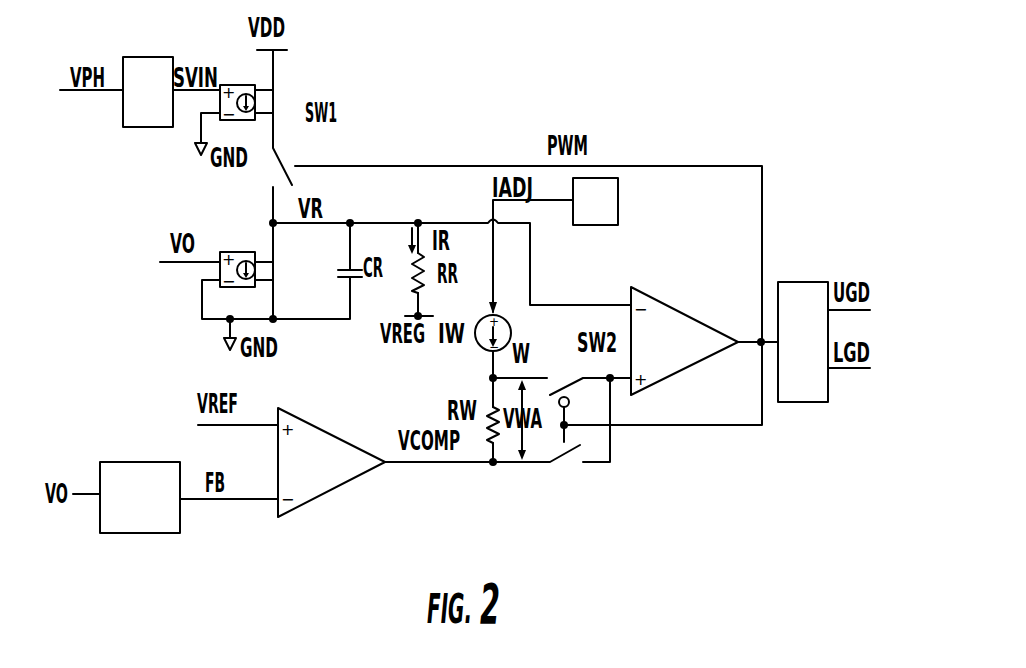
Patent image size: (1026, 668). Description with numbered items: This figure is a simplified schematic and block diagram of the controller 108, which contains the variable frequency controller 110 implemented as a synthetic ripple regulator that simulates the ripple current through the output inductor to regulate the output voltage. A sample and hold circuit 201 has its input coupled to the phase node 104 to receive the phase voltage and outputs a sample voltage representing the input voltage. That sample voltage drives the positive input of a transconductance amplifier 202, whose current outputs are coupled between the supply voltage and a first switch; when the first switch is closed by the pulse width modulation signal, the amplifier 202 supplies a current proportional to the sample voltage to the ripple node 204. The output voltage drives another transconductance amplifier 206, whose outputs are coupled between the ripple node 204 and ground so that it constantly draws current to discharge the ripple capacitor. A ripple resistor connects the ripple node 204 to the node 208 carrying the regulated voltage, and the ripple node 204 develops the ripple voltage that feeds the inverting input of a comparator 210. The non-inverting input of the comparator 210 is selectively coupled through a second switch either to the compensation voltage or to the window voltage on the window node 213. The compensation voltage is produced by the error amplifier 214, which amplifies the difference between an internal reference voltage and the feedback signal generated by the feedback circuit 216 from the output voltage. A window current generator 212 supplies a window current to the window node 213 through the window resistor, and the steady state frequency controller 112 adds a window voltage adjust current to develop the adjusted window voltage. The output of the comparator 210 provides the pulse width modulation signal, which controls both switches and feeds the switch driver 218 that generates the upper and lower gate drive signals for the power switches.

The phase node 104 is at (105, 92).
The sample and hold circuit 201 is at (166, 112).
The transconductance amplifier 202 is at (241, 85).
The transconductance amplifier 206 is at (240, 252).
The ripple node 204 is at (418, 221).
The node 208 is at (420, 315).
The window current generator 212 is at (512, 330).
The window node 213 is at (490, 377).
The comparator 210 is at (672, 306).
The switch driver 218 is at (818, 282).
The error amplifier 214 is at (322, 430).
The feedback circuit 216 is at (123, 462).
The steady state frequency controller 112 is at (611, 211).
The controller 108 is at (724, 96).
The variable frequency controller 110 is at (135, 281).